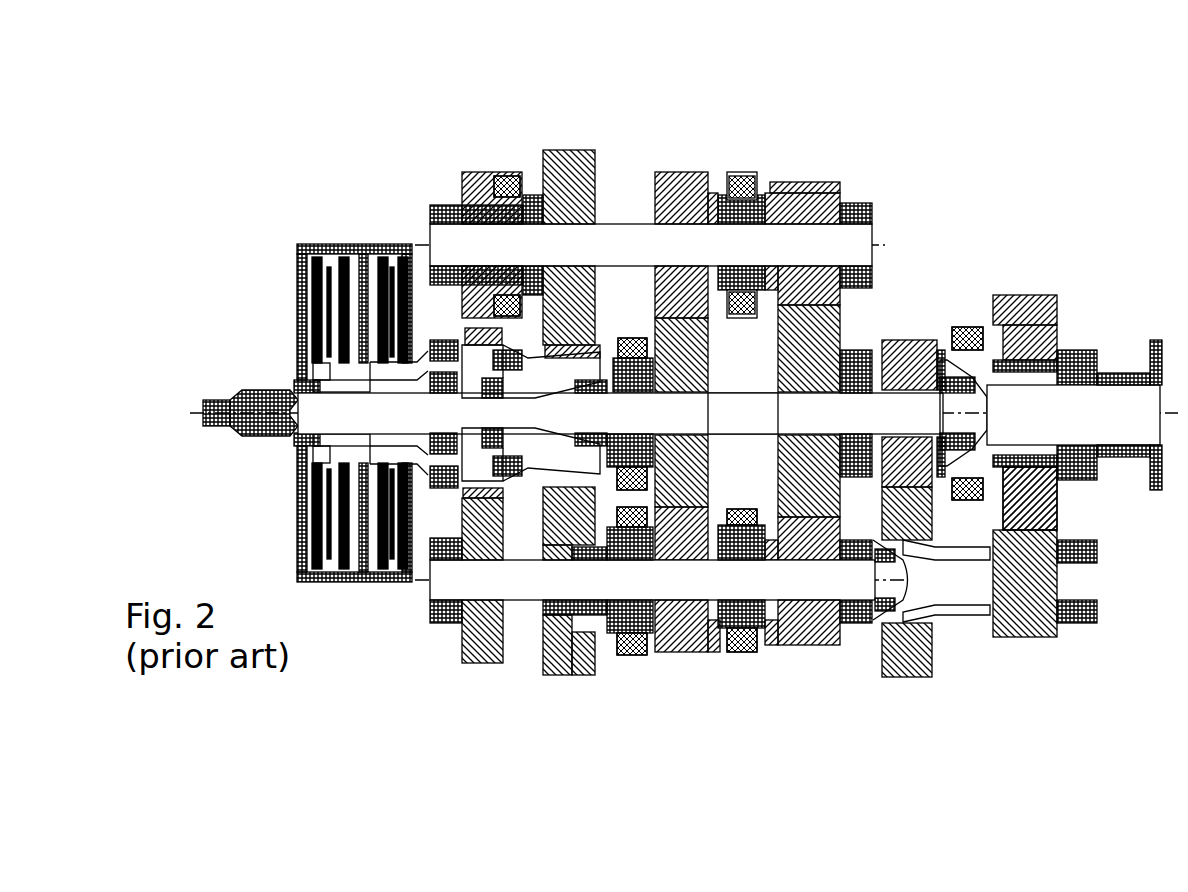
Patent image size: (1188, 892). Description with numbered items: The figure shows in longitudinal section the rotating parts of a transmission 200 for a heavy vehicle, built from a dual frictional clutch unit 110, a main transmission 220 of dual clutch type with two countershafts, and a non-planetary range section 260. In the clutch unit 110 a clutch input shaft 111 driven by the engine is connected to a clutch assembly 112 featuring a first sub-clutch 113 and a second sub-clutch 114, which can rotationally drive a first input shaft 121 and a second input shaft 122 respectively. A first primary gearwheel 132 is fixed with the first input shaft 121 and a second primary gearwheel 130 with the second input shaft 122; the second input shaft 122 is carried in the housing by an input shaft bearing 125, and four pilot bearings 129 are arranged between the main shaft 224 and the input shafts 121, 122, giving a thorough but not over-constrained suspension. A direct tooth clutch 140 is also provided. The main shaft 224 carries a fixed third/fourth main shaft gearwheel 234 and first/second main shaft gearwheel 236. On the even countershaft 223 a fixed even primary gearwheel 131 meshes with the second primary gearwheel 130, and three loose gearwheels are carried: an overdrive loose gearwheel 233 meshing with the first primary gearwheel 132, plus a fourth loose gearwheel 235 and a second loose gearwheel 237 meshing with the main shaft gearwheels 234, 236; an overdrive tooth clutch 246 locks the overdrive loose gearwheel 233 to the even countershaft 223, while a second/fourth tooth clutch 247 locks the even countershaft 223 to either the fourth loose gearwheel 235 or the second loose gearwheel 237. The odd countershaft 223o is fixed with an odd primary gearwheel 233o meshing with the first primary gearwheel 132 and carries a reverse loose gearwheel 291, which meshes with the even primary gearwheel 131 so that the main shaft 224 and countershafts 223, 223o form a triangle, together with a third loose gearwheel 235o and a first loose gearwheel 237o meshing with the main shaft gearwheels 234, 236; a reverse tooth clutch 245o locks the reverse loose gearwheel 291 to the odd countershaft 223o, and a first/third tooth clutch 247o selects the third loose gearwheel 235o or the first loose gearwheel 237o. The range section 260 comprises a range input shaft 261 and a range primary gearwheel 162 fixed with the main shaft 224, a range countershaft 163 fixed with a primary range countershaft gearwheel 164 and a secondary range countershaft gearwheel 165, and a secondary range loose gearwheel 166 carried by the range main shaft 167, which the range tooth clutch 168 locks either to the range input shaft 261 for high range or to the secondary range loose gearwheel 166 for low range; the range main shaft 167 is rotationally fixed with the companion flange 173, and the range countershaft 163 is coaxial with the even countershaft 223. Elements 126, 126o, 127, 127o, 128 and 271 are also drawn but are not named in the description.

The transmission 200 is at (295, 100).
The main transmission 220 is at (183, 705).
The dual frictional clutch unit 110 is at (154, 256).
The clutch input shaft 111 is at (237, 398).
The motor housing 112 is at (359, 243).
The first sub-clutch 113 is at (321, 369).
The second sub-clutch 114 is at (376, 361).
The first input shaft 121 is at (367, 422).
The second input shaft 122 is at (421, 451).
The input shaft bearing 125 is at (440, 491).
The bearing 126 is at (430, 628).
The bearing 126o is at (438, 205).
The bearing 127 is at (855, 625).
The bearing 127o is at (870, 204).
The bearing 128 is at (858, 478).
The pilot bearings 129 is at (483, 504).
The second primary gearwheel 130 is at (446, 364).
The even primary gearwheel 131 is at (470, 667).
The first primary gearwheel 132 is at (575, 494).
The direct tooth clutch 140 is at (632, 490).
The companion flange 173 is at (1153, 336).
The even countershaft 223 is at (492, 592).
The odd countershaft 223o is at (625, 224).
The main shaft 224 is at (748, 440).
The overdrive loose gearwheel 233 is at (543, 677).
The odd primary gearwheel 233o is at (575, 151).
The third/fourth main shaft gearwheel 234 is at (688, 497).
The fourth loose gearwheel 235 is at (665, 654).
The third loose gearwheel 235o is at (697, 173).
The first/second main shaft gearwheel 236 is at (808, 505).
The second loose gearwheel 237 is at (790, 652).
The first loose gearwheel 237o is at (808, 183).
The reverse tooth clutch 245o is at (510, 175).
The overdrive tooth clutch 246 is at (622, 657).
The second/fourth tooth clutch 247 is at (738, 527).
The first/third tooth clutch 247o is at (745, 173).
The range section 260 is at (1081, 732).
The range input shaft 261 is at (1023, 492).
The range primary gearwheel 162 is at (1080, 563).
The range countershaft 163 is at (1005, 583).
The primary range countershaft gearwheel 164 is at (957, 462).
The secondary range countershaft gearwheel 165 is at (943, 562).
The secondary range loose gearwheel 166 is at (912, 533).
The range main shaft 167 is at (975, 505).
The range tooth clutch 168 is at (895, 473).
The flange 271 is at (1118, 400).
The reverse loose gearwheel 291 is at (470, 173).